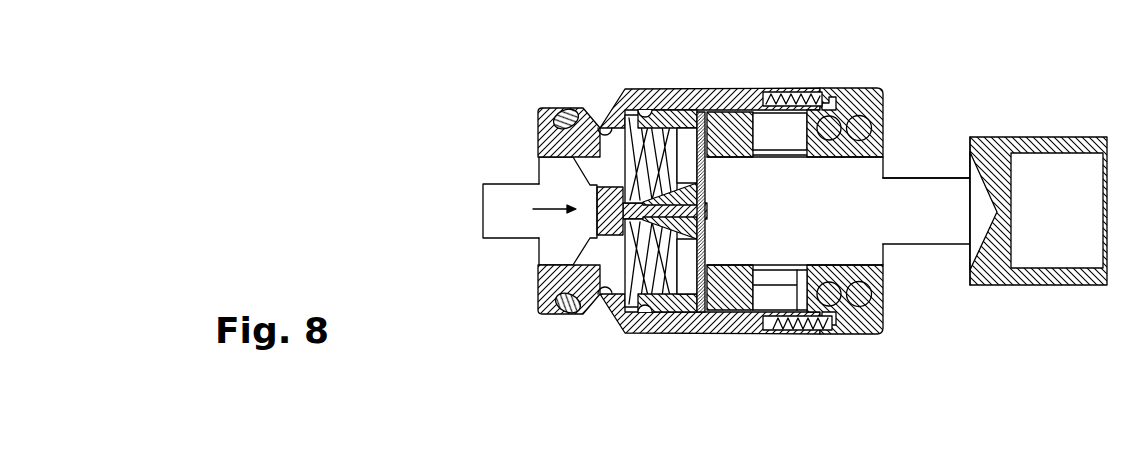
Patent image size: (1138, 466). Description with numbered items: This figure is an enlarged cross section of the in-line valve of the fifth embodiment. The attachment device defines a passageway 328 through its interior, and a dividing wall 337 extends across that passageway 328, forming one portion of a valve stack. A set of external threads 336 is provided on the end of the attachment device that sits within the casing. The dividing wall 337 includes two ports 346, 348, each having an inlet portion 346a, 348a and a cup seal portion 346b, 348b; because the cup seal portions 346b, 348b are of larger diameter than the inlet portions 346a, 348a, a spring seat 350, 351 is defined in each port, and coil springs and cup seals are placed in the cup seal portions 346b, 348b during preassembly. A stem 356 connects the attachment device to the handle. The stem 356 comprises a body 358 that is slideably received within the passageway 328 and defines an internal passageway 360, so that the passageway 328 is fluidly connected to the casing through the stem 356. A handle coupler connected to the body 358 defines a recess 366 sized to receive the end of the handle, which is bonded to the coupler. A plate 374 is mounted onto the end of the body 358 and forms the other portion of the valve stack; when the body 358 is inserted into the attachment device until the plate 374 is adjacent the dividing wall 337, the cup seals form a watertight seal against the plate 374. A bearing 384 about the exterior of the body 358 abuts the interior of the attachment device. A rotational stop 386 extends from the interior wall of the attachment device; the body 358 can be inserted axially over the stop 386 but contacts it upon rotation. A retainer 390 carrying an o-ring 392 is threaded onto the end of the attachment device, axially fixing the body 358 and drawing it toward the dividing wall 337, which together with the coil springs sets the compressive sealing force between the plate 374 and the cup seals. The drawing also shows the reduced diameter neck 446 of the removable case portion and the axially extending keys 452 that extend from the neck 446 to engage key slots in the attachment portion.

The passageway 328 is at (534, 209).
The external threads 336 is at (780, 97).
The dividing wall 337 is at (622, 114).
The port 346 is at (607, 152).
The inlet portion 346a is at (596, 127).
The cup seal portion 346b is at (670, 112).
The port 348 is at (605, 268).
The inlet portion 348a is at (590, 315).
The cup seal portion 348b is at (660, 312).
The spring seat 350 is at (642, 110).
The spring seat 351 is at (632, 333).
The stem 356 is at (925, 173).
The body 358 is at (848, 166).
The passageway 360 is at (790, 231).
The recess 366 is at (1050, 231).
The plate 374 is at (705, 212).
The bearing 384 is at (823, 103).
The rotational stop 386 is at (773, 297).
The retainer 390 is at (864, 88).
The o-ring 392 is at (852, 112).
The reduced diameter neck 446 is at (562, 108).
The keys 452 is at (502, 238).